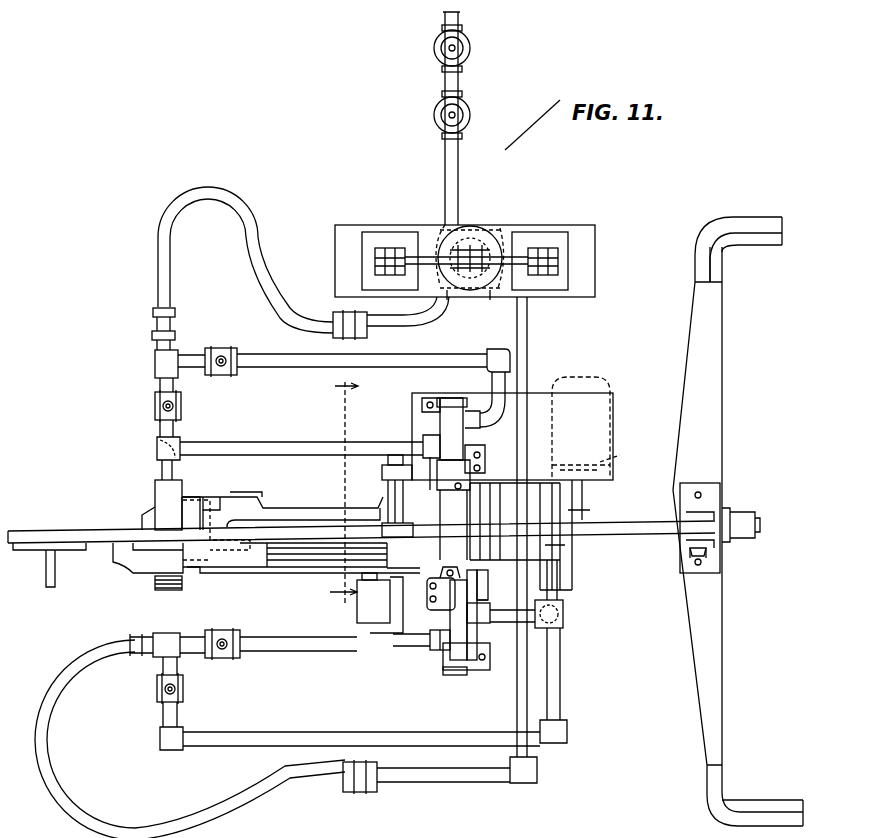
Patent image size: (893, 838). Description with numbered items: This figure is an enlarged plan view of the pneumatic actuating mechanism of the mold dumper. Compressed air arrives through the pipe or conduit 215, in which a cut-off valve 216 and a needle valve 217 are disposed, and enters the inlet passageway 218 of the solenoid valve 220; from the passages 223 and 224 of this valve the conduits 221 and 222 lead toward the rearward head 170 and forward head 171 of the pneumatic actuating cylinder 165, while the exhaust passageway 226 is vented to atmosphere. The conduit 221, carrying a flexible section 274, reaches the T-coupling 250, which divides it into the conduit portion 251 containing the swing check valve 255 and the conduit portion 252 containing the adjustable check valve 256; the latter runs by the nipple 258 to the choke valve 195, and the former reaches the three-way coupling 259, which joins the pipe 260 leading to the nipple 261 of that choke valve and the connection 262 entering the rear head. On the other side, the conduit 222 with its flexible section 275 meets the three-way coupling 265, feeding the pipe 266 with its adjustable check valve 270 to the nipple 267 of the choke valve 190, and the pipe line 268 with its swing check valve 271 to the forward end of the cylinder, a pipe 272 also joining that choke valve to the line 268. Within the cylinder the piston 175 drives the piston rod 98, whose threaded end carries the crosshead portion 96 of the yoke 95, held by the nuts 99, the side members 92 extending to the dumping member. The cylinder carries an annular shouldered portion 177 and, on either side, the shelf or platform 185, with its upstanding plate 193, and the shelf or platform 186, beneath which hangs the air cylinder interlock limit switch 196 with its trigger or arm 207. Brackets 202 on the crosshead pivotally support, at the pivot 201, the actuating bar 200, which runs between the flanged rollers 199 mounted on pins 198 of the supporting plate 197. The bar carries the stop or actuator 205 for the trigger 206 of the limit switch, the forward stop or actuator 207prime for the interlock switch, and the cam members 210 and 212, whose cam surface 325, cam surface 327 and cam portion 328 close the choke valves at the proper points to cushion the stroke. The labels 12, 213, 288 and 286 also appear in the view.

The pipe or conduit 215 is at (460, 16).
The cut-off valve 216 is at (468, 58).
The needle valve 217 is at (470, 115).
The inlet passageway 218 is at (440, 232).
The solenoid valve 220 is at (505, 235).
The passage 224 is at (535, 232).
The passage 223 is at (493, 303).
The conduit 221 is at (407, 320).
The flexible section 274 is at (258, 243).
The T-coupling 250 is at (158, 370).
The conduit portion 251 is at (152, 392).
The conduit portion 252 is at (192, 365).
The adjustable check valve 256 is at (228, 360).
The exhaust passageway 226 is at (493, 364).
The swing check valve 255 is at (180, 407).
The three-way coupling 259 is at (172, 445).
The pipe 260 is at (305, 440).
The connection 262 is at (160, 470).
The rearward head 170 is at (155, 505).
The actuating bar 200 is at (57, 530).
The stop or actuator 205 is at (45, 570).
The cam surface 325 is at (142, 580).
The cam member 212 is at (293, 512).
The piston 175 is at (200, 515).
The cam surface 327 is at (245, 500).
The cam portion 328 is at (380, 505).
The cam member 210 is at (222, 575).
The pneumatic actuating cylinder 165 is at (285, 585).
The pins 198 is at (395, 455).
The supporting plate 197 is at (384, 478).
The flanged rollers 199 is at (400, 540).
The nipple 261 is at (425, 430).
The choke valve 195 is at (448, 410).
The nipple 258 is at (480, 432).
The annular shouldered portion 177 is at (468, 490).
The air cylinder interlock limit switch 196 is at (597, 385).
The shelf or platform 186 is at (537, 395).
The trigger or arm 207 is at (612, 462).
The stop or actuator 207prime is at (585, 505).
The conduit 222 is at (529, 340).
The forward head 171 is at (573, 575).
The piston rod 98 is at (652, 535).
The section line 12 is at (334, 491).
The trigger 206 is at (357, 574).
The upstanding plate 193 is at (390, 652).
The shelf or platform 185 is at (443, 672).
The choke valve 190 is at (470, 676).
The nipple 267 is at (432, 655).
The port 213 is at (480, 616).
The pipe 272 is at (558, 624).
The pipe line 268 is at (182, 714).
The three-way coupling 265 is at (165, 633).
The adjustable check valve 270 is at (218, 658).
The pipe 266 is at (265, 655).
The swing check valve 271 is at (158, 690).
The flexible section 275 is at (125, 830).
The crosshead portion 96 is at (718, 642).
The side members 92 is at (758, 228).
The yoke 95 is at (730, 392).
The brackets 202 is at (708, 497).
The nuts 99 is at (737, 512).
The pivot 201 is at (708, 542).
The member 288 is at (600, 822).
The member 286 is at (656, 828).